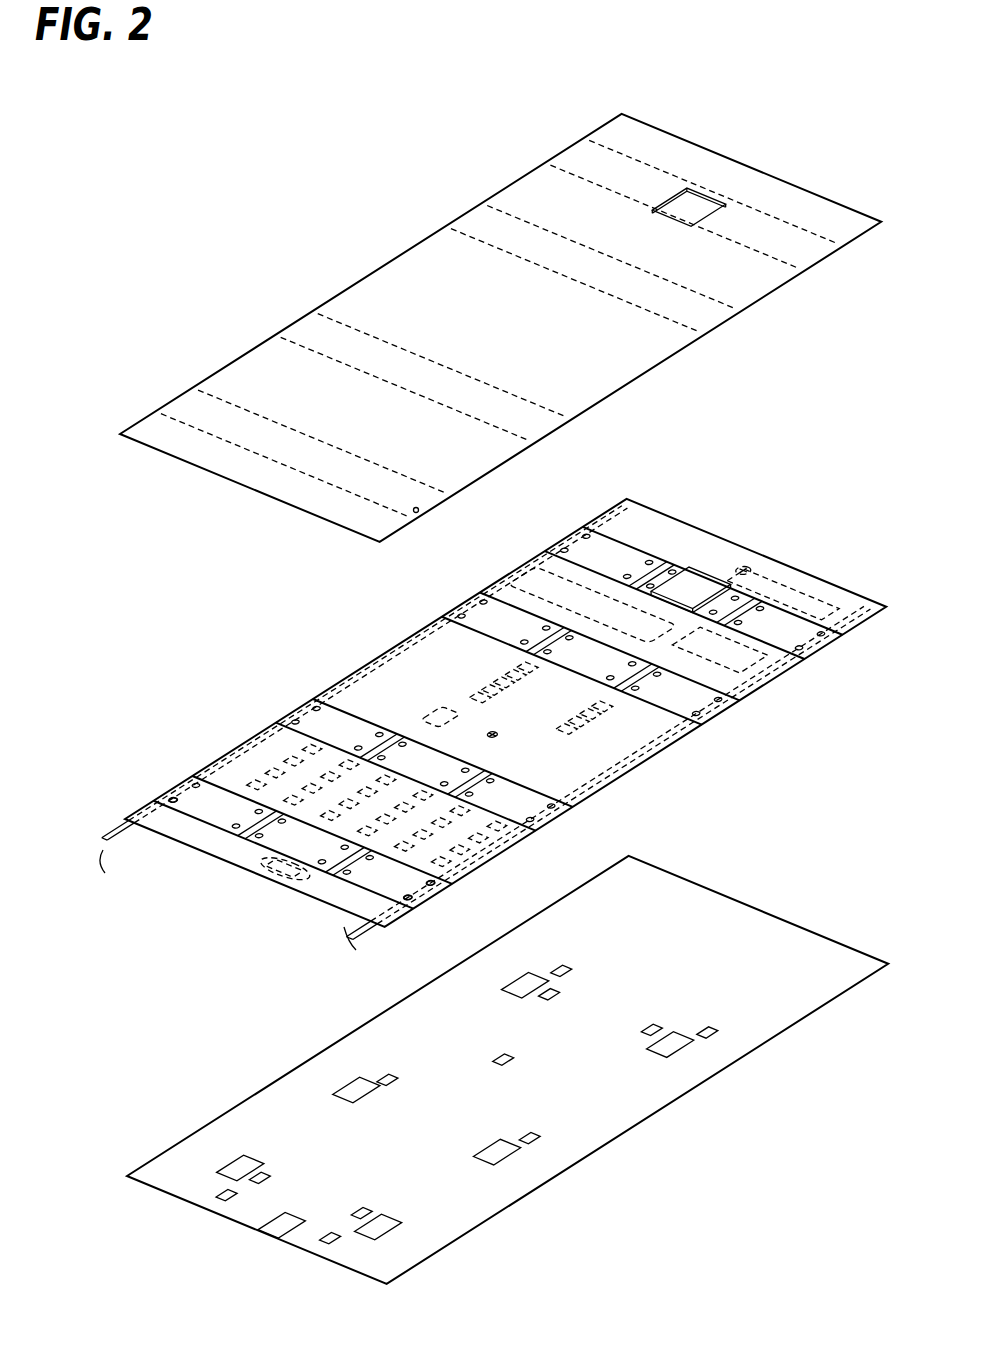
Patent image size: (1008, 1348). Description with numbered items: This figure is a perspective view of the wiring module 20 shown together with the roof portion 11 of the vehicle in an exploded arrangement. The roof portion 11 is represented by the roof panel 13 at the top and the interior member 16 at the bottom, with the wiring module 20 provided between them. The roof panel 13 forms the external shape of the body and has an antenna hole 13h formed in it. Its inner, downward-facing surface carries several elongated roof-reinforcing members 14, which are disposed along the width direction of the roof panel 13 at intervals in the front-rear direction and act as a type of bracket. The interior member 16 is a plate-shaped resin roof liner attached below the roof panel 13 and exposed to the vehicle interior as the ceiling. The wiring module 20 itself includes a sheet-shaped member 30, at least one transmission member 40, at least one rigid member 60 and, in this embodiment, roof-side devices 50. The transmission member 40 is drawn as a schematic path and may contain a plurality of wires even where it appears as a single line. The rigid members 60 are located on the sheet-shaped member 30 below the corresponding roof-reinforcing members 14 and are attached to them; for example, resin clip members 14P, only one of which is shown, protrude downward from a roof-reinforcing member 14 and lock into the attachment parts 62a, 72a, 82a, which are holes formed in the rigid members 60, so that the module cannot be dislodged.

The roof portion 11 is at (181, 335).
The roof panel 13 is at (405, 275).
The antenna hole 13h is at (718, 200).
The roof-reinforcing member 14 is at (636, 162).
The clip member 14P is at (418, 511).
The interior member 16 is at (757, 912).
The wiring module 20 is at (715, 523).
The sheet-shaped member 30 is at (658, 520).
The transmission member 40 is at (106, 842).
The roof-side device 50 is at (717, 577).
The rigid member 60 is at (598, 535).
The attachment part 62a is at (171, 803).
The attachment part 72a is at (250, 868).
The attachment part 82a is at (407, 899).